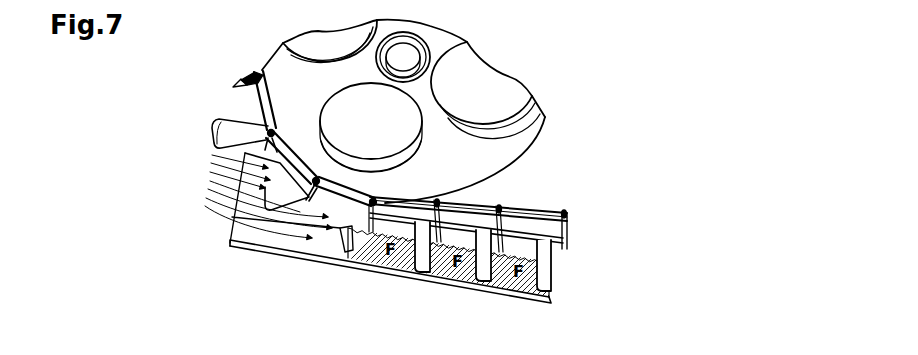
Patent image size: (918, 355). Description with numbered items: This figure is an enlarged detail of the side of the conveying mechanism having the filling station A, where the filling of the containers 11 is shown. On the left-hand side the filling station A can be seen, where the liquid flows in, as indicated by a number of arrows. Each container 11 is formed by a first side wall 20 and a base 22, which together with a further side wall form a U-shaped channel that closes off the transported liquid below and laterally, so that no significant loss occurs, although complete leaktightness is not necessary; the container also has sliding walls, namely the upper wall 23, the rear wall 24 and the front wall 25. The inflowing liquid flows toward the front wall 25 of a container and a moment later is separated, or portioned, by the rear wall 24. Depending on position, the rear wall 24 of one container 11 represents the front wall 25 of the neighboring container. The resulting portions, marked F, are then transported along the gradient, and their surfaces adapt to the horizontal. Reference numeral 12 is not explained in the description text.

The container 11 is at (430, 273).
The contact pad 12 is at (248, 80).
The first side wall 20 is at (537, 205).
The base 22 is at (298, 260).
The upper wall 23 is at (565, 222).
The rear wall 24 is at (252, 230).
The front wall 25 is at (332, 262).
The filling station A is at (262, 240).